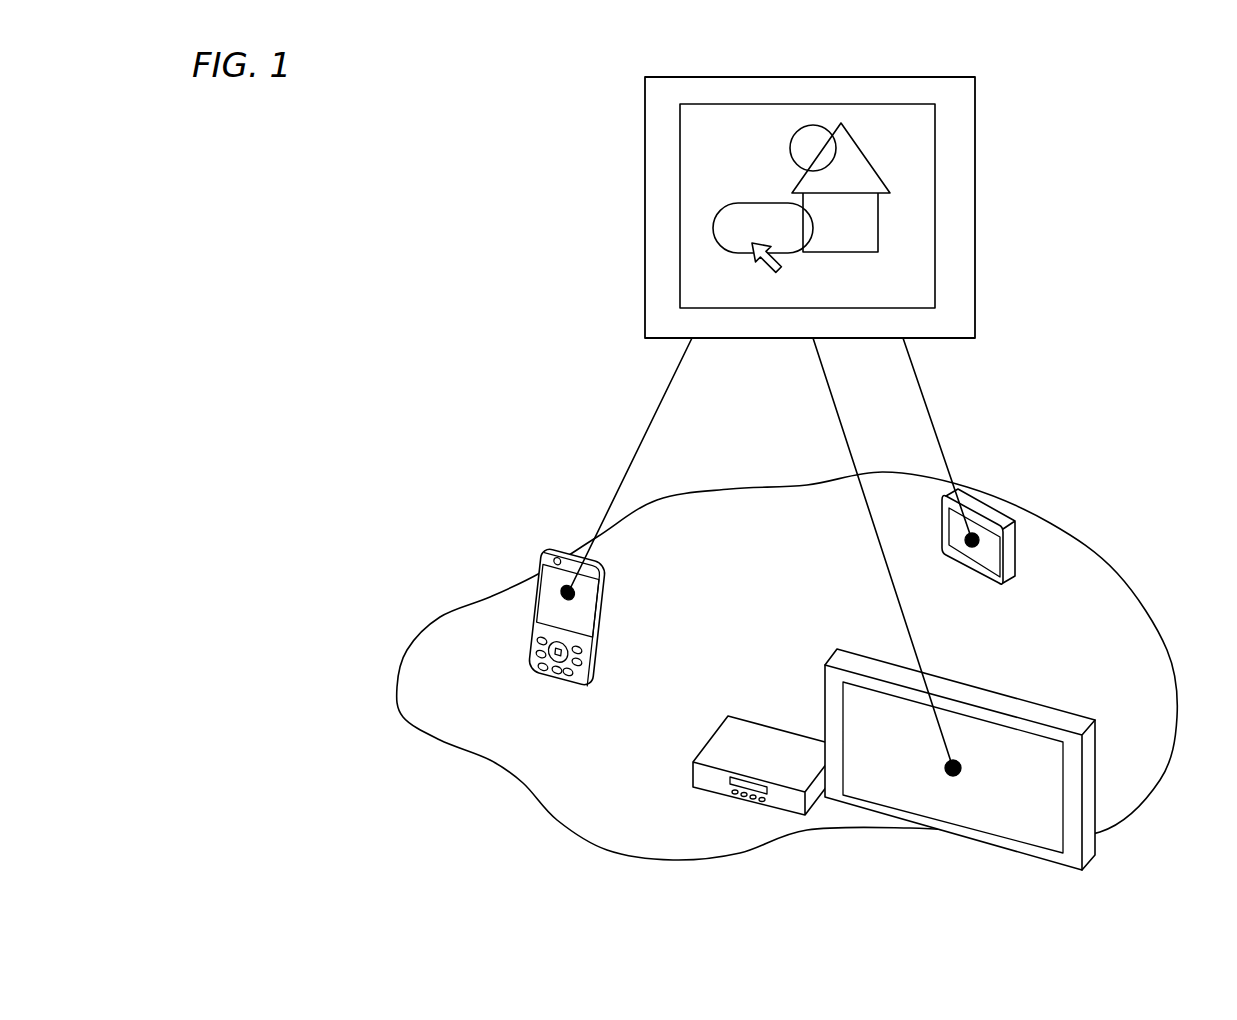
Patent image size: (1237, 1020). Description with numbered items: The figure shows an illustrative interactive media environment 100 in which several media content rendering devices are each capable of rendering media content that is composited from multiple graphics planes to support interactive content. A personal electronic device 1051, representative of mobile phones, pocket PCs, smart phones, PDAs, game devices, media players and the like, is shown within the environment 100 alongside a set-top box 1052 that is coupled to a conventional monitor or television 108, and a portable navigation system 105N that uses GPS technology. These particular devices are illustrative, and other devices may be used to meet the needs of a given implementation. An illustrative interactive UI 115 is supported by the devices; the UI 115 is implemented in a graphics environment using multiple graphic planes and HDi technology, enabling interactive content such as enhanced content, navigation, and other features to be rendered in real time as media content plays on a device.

The interactive media environment 100 is at (473, 753).
The portable navigation system 105N is at (693, 771).
The personal electronic device 1051 is at (550, 690).
The set-top box 1052 is at (1007, 585).
The television 108 is at (1058, 868).
The interactive UI 115 is at (936, 188).